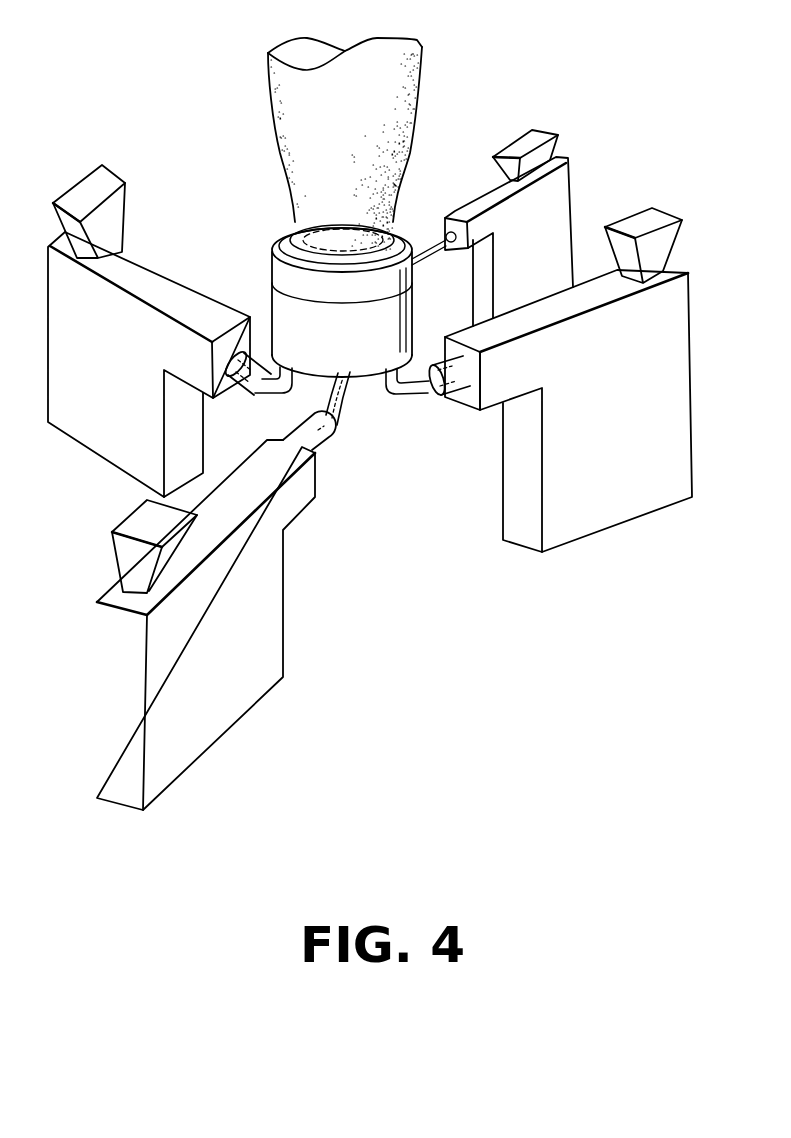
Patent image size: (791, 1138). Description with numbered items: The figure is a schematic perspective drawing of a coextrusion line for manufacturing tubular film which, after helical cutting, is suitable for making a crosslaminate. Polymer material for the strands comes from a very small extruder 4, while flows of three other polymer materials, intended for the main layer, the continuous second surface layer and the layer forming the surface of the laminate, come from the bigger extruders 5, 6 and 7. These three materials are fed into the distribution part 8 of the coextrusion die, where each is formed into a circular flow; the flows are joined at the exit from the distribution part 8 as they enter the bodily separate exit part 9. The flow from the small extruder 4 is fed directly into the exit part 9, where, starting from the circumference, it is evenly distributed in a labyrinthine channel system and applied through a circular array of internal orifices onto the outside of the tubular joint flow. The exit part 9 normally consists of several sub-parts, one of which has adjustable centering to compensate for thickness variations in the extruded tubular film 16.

The extruded tubular film 16 is at (378, 110).
The distribution part 8 is at (346, 352).
The exit part 9 is at (283, 272).
The very small extruder 4 is at (553, 201).
The bigger extruder 5 is at (223, 666).
The bigger extruder 6 is at (622, 424).
The bigger extruder 7 is at (109, 374).